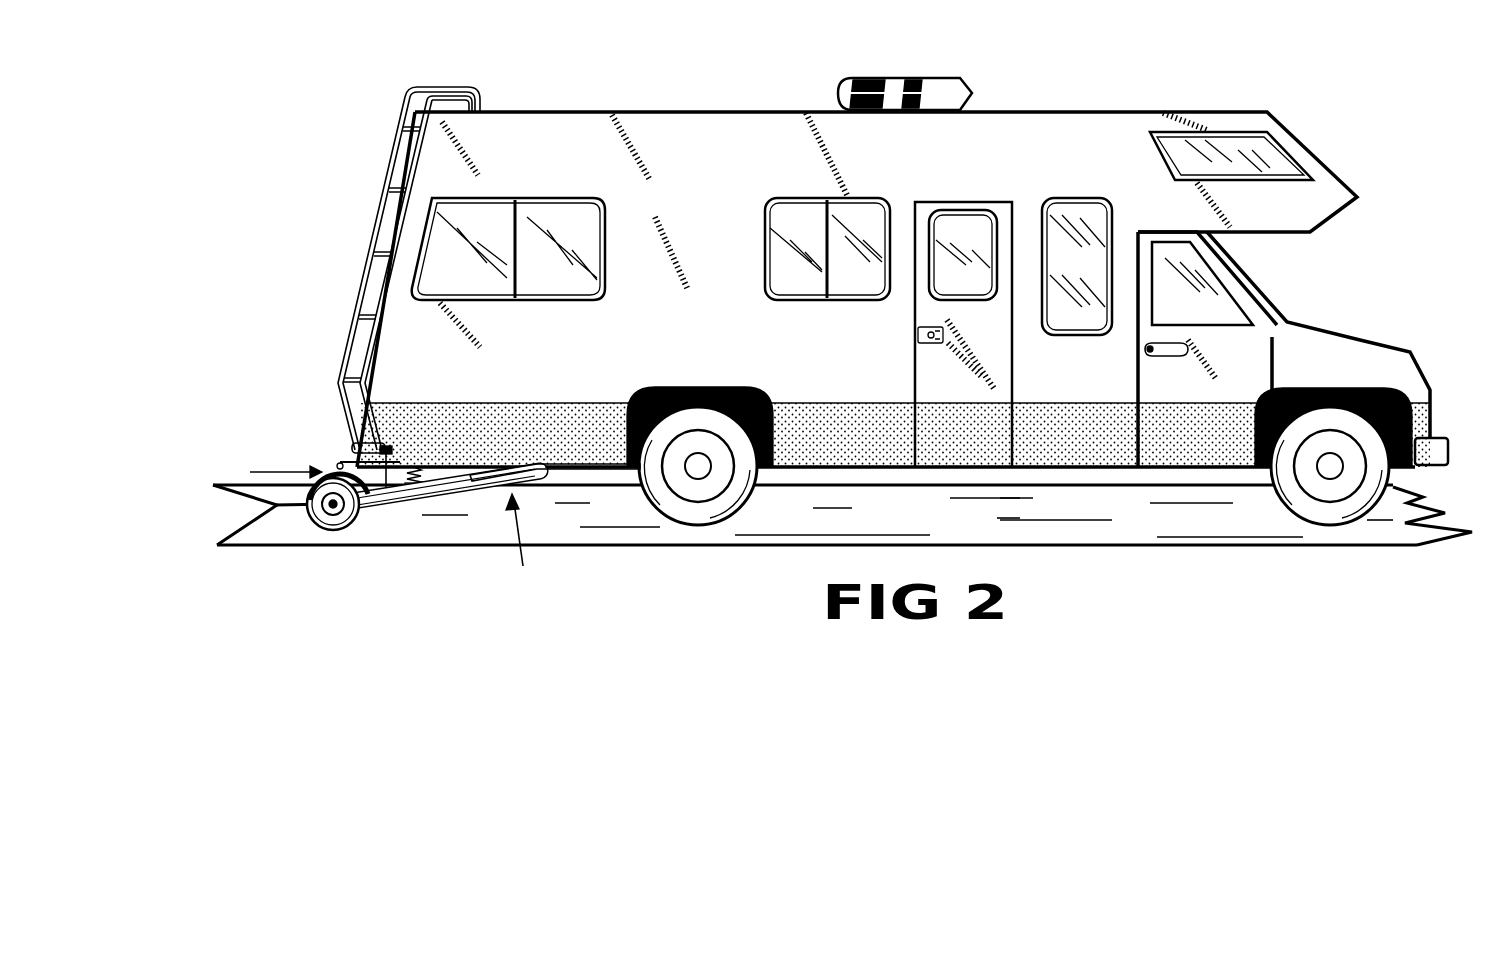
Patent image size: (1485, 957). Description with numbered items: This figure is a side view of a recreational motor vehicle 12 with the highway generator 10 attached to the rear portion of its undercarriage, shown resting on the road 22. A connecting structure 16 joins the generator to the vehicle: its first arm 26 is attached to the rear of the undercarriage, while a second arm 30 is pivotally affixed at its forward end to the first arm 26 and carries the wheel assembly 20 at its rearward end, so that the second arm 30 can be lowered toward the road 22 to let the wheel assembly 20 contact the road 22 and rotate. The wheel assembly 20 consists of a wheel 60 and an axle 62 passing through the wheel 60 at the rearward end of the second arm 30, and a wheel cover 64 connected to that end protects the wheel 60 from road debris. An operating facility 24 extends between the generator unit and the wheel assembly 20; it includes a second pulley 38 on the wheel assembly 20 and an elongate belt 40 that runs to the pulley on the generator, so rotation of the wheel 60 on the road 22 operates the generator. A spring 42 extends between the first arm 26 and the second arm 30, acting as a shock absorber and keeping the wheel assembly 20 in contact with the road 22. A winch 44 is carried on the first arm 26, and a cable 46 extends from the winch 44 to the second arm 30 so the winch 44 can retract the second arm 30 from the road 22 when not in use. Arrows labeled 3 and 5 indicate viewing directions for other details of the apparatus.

The direction arrow 3 is at (277, 472).
The view direction arrow 5 is at (523, 549).
The highway generator 10 is at (436, 485).
The motor vehicle 12 is at (588, 110).
The connecting structure 16 is at (349, 450).
The wheel assembly 20 is at (330, 550).
The road 22 is at (666, 547).
The operating facility 24 is at (481, 495).
The first arm 26 is at (337, 467).
The second arm 30 is at (530, 472).
The second pulley 38 is at (322, 506).
The elongate belt 40 is at (567, 474).
The spring 42 is at (448, 463).
The winch 44 is at (383, 447).
The cable 46 is at (410, 488).
The wheel 60 is at (330, 518).
The axle 62 is at (337, 514).
The wheel cover 64 is at (240, 512).